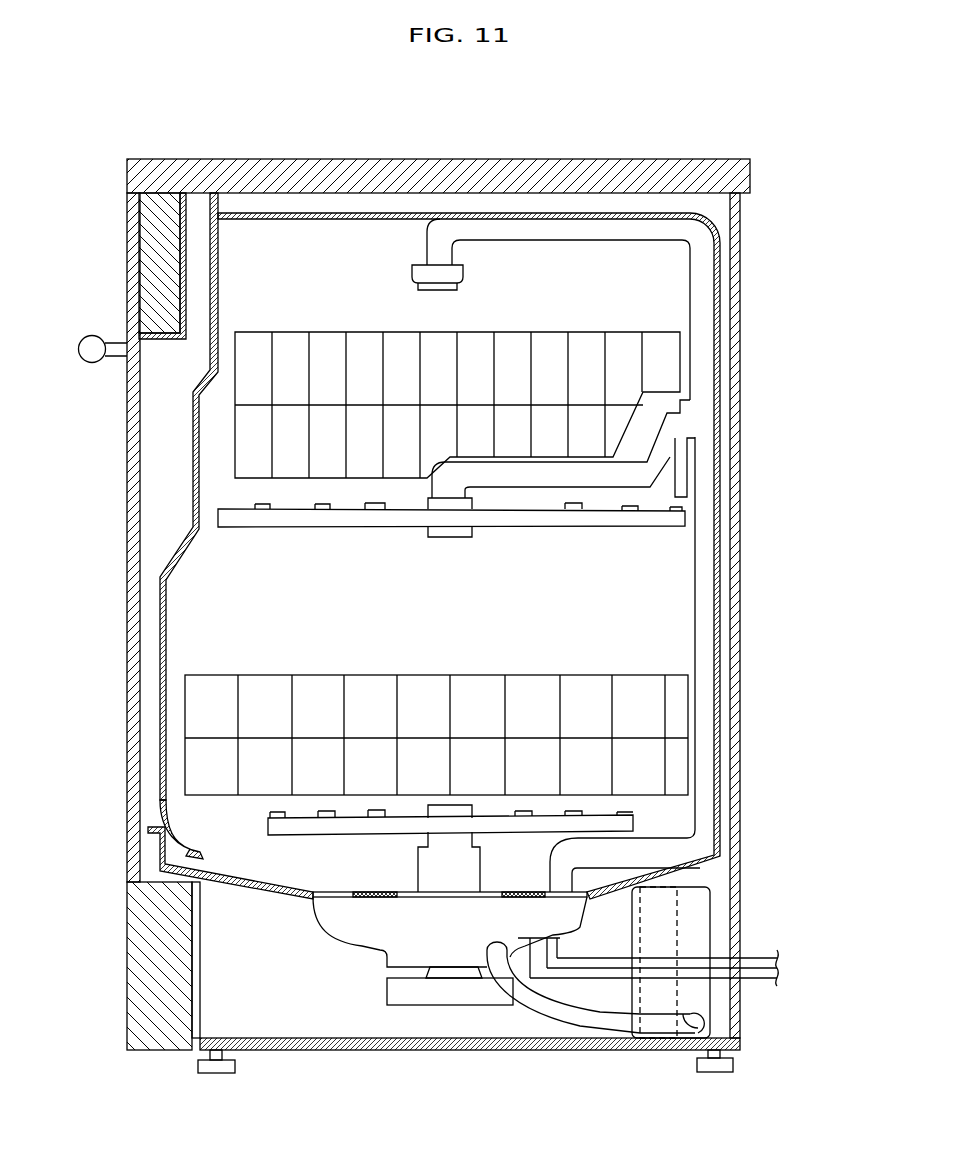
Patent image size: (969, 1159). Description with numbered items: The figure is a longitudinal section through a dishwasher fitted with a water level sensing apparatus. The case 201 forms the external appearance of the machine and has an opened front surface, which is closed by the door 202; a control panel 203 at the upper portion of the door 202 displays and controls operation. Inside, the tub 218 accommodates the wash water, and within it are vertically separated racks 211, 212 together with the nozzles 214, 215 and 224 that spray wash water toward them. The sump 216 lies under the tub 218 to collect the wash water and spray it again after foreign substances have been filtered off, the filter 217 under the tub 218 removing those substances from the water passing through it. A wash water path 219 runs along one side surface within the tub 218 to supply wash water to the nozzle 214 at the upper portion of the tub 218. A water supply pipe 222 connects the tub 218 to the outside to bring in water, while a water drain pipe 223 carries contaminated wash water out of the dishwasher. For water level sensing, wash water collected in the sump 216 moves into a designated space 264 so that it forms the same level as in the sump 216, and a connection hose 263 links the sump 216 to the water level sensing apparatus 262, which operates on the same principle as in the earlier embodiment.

The case 201 is at (740, 607).
The door 202 is at (132, 580).
The control panel 203 is at (160, 207).
The rack 211 is at (237, 418).
The rack 212 is at (185, 706).
The nozzle 214 is at (680, 518).
The nozzle 215 is at (605, 823).
The sump 216 is at (633, 910).
The filter 217 is at (363, 900).
The tub 218 is at (722, 665).
The wash water path 219 is at (712, 578).
The water supply pipe 222 is at (753, 950).
The water drain pipe 223 is at (753, 987).
The nozzle 224 is at (440, 252).
The water level sensing apparatus 262 is at (677, 998).
The connection hose 263 is at (593, 1022).
The designated space 264 is at (697, 910).